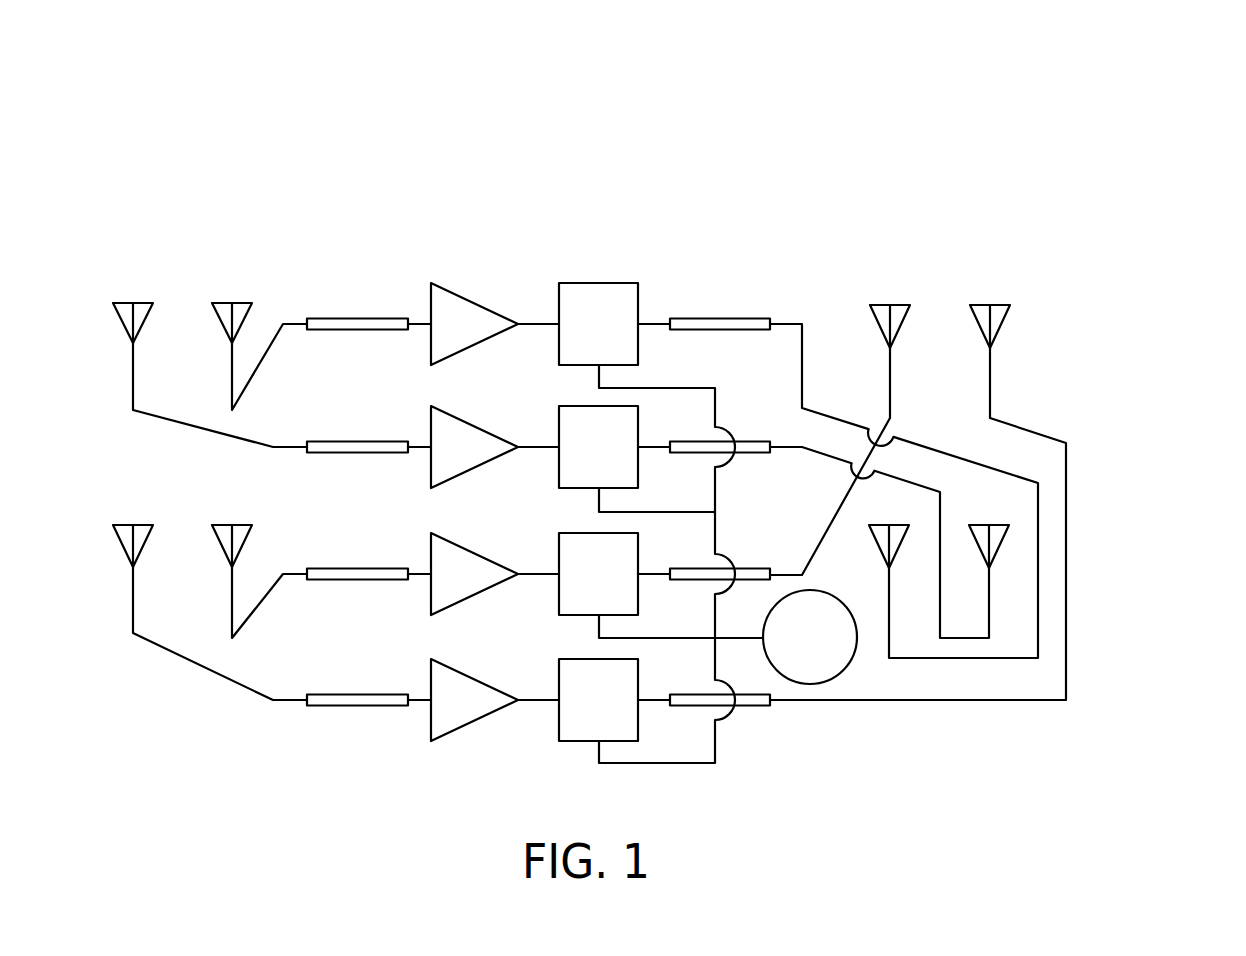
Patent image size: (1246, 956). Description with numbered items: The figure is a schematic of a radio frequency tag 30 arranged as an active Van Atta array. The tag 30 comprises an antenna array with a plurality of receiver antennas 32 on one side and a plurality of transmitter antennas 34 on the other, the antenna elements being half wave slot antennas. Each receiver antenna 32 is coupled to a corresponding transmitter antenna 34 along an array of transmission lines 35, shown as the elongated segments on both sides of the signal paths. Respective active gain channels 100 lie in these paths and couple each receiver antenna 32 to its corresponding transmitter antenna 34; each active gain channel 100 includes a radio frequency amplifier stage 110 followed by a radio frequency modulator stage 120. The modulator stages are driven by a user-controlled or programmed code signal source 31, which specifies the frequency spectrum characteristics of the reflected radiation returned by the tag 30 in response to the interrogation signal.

The tag 30 is at (1106, 148).
The code signal source 31 is at (808, 684).
The receiver antennas 32 is at (268, 302).
The transmitter antennas 34 is at (1027, 302).
The transmission lines 35 is at (356, 262).
The active gain channels 100 is at (652, 263).
The radio frequency amplifier stage 110 is at (428, 674).
The radio frequency modulator stage 120 is at (558, 670).